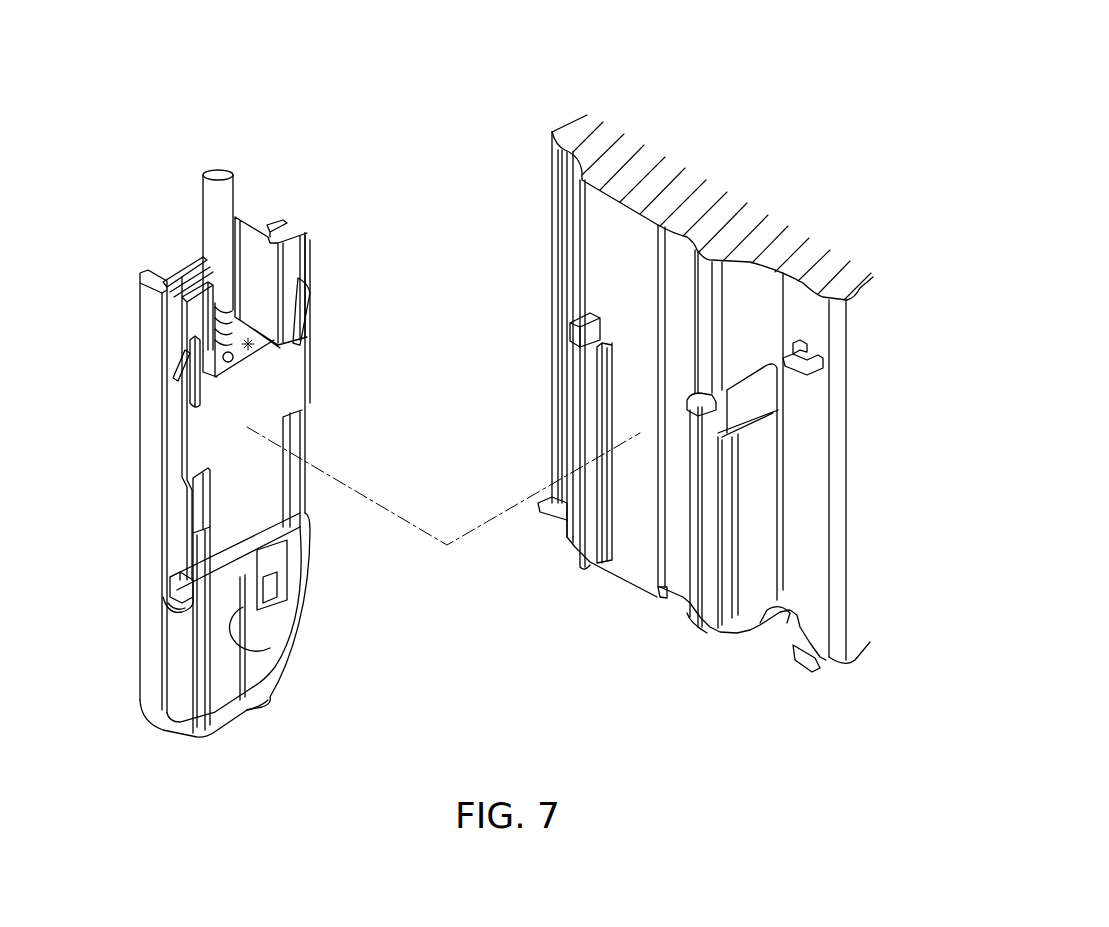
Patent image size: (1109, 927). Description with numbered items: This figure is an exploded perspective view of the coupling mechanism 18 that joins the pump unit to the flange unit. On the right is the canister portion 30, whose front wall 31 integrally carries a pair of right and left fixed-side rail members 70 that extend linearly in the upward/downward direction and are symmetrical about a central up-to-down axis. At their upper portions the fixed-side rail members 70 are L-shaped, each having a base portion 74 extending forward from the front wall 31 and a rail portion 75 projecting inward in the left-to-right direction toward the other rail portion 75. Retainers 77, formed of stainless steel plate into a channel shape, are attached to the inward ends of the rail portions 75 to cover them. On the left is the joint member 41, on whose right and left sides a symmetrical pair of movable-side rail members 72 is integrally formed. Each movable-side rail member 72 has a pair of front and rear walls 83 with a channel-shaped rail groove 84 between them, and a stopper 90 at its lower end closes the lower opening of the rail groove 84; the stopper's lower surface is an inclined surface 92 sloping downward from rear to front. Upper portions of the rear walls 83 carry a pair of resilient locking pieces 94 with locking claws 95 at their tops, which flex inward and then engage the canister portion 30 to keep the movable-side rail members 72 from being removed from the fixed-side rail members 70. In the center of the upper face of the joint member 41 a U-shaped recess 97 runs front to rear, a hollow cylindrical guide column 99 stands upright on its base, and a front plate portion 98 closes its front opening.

The coupling mechanism 18 is at (423, 98).
The joint member 41 is at (263, 212).
The guide column 99 is at (217, 200).
The front plate portion 98 is at (200, 256).
The rail groove 84 is at (173, 270).
The wall 83 is at (150, 302).
The locking claw 95 is at (178, 375).
The resilient locking piece 94 is at (178, 398).
The movable-side rail member 72 is at (160, 478).
The recess 97 is at (252, 348).
The stopper 90 is at (170, 596).
The inclined surface 92 is at (168, 618).
The canister portion 30 is at (862, 434).
The front wall 31 is at (808, 592).
The fixed-side rail member 70 is at (578, 360).
The base portion 74 is at (578, 322).
The rail portion 75 is at (577, 537).
The retainer 77 is at (590, 420).